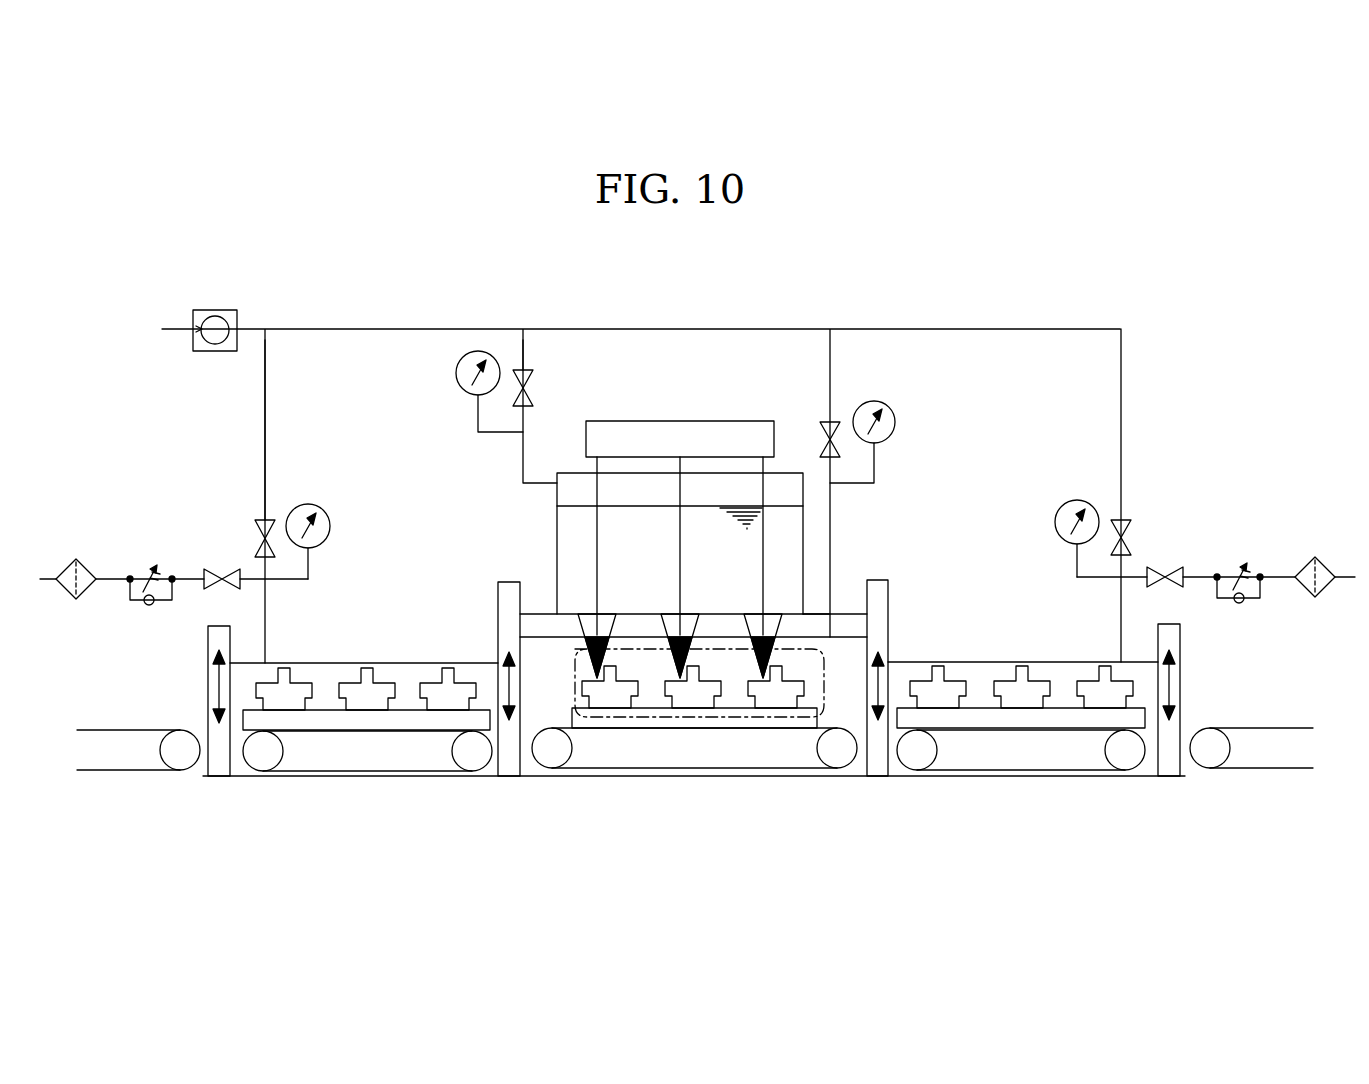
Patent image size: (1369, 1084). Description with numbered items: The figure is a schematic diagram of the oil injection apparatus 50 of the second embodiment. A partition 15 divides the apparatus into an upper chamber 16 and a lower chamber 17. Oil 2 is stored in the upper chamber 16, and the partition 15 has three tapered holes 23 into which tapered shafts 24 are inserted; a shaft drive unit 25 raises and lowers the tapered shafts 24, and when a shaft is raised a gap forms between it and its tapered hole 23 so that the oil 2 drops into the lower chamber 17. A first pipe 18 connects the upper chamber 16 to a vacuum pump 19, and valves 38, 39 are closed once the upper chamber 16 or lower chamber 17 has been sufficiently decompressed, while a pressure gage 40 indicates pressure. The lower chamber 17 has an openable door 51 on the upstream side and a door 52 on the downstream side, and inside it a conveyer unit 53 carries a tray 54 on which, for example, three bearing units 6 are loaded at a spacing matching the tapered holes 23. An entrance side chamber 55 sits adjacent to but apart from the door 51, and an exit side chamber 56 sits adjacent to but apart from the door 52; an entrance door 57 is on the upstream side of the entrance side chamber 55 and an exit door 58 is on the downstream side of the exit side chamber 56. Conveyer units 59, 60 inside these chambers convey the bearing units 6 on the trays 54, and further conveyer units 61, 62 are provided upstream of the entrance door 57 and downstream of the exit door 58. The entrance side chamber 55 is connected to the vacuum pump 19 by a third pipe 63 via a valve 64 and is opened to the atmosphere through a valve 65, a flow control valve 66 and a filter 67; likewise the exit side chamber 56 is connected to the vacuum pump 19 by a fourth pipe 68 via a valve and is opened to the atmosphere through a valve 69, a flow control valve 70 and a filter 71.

The oil 2 is at (580, 502).
The bearing unit 6 is at (290, 682).
The partition 15 is at (846, 620).
The upper chamber 16 is at (786, 487).
The lower chamber 17 is at (850, 650).
The first pipe 18 is at (523, 345).
The vacuum pump 19 is at (222, 310).
The tapered hole 23 is at (606, 625).
The tapered shaft 24 is at (590, 640).
The shaft drive unit 25 is at (730, 440).
The valve 38 is at (533, 383).
The valve 39 is at (828, 422).
The pressure gage 40 is at (330, 515).
The oil injection apparatus 50 is at (1010, 296).
The door 51 is at (498, 585).
The door 52 is at (888, 640).
The conveyer unit 53 is at (798, 755).
The tray 54 is at (312, 715).
The entrance side chamber 55 is at (398, 660).
The exit side chamber 56 is at (1058, 660).
The entrance door 57 is at (208, 665).
The exit door 58 is at (1180, 648).
The conveyer unit 59 is at (425, 755).
The conveyer unit 60 is at (1090, 755).
The conveyer unit 61 is at (128, 730).
The conveyer unit 62 is at (1290, 728).
The third pipe 63 is at (265, 428).
The valve 64 is at (262, 520).
The valve 65 is at (222, 566).
The flow control valve 66 is at (152, 568).
The filter 67 is at (80, 562).
The fourth pipe 68 is at (1128, 515).
The valve 69 is at (1168, 566).
The flow control valve 70 is at (1250, 568).
The filter 71 is at (1325, 565).